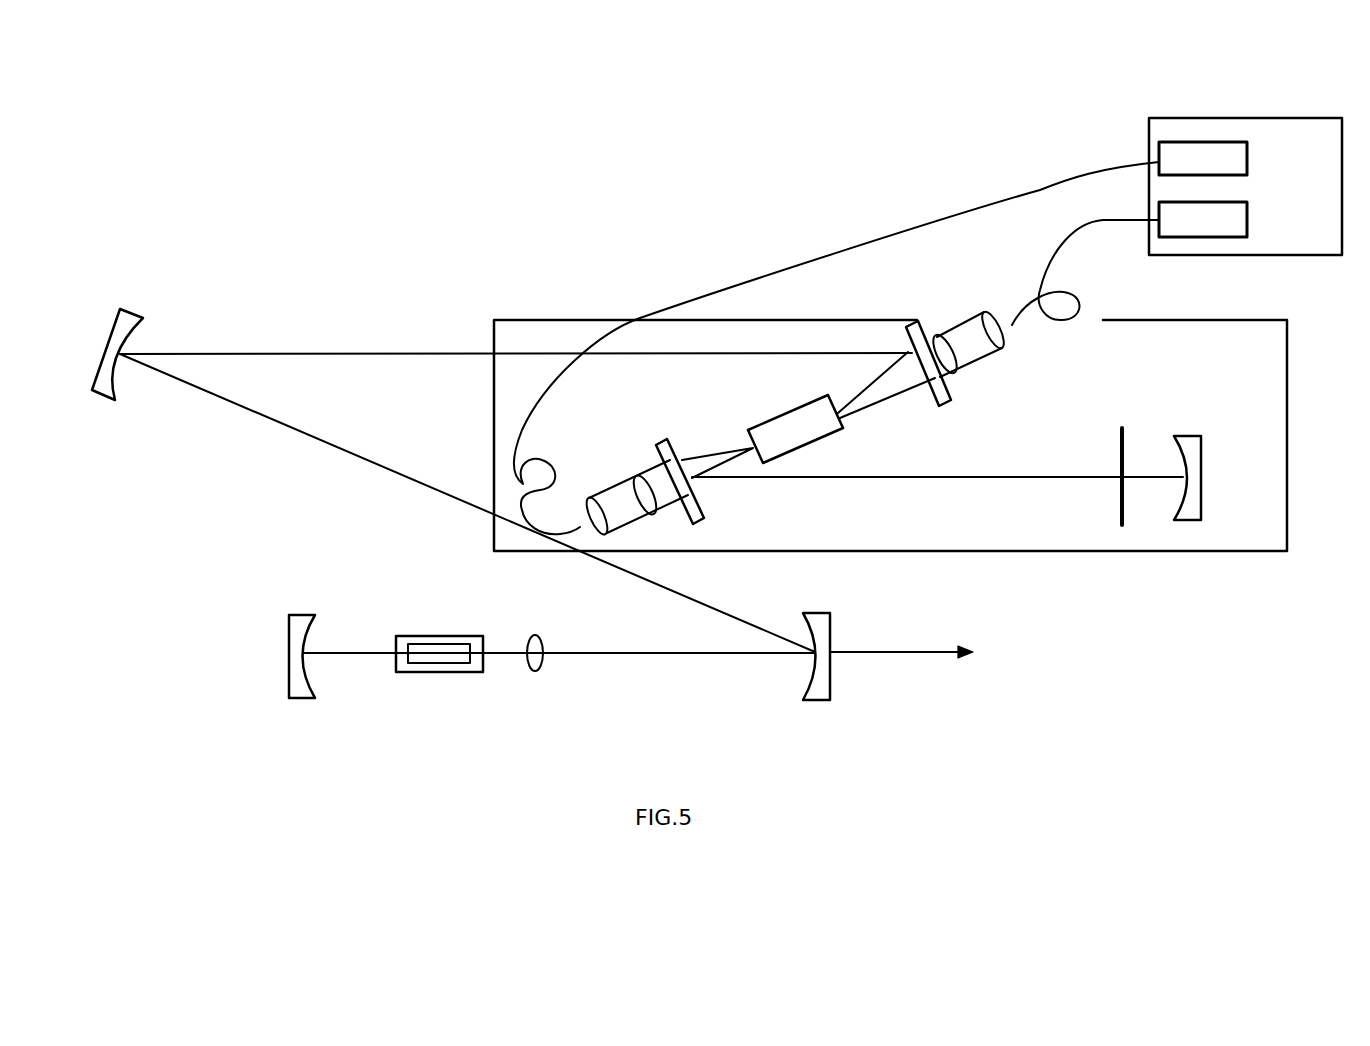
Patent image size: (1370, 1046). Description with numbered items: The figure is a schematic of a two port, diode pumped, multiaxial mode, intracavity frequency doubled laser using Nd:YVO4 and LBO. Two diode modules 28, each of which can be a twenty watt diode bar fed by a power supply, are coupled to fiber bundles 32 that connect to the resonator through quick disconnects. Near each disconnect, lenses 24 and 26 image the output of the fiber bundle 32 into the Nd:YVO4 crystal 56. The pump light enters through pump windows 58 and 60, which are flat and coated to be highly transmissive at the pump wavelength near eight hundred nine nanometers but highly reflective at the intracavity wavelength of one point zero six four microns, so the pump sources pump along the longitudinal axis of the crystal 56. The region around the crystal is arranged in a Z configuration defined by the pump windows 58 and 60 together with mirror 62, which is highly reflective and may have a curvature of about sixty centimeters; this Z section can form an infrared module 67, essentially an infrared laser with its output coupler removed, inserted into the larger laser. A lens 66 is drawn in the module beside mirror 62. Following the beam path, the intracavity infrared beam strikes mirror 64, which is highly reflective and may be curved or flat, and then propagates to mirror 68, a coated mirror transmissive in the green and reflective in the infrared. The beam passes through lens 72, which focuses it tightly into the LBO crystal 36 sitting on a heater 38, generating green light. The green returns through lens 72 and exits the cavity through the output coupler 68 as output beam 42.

The lens 24 is at (957, 377).
The lens 26 is at (1002, 351).
The diode module 28 is at (1250, 155).
The fiber bundle 32 is at (1060, 183).
The LBO crystal 36 is at (446, 615).
The heater 38 is at (484, 642).
The output beam 42 is at (912, 653).
The Nd:YVO4 crystal 56 is at (770, 420).
The pump window 58 is at (915, 323).
The pump window 60 is at (678, 520).
The mirror 62 is at (1202, 450).
The mirror 64 is at (110, 342).
The lens 66 is at (1120, 510).
The infrared module 67 is at (1203, 549).
The output coupler 68 is at (832, 630).
The lens 72 is at (541, 666).